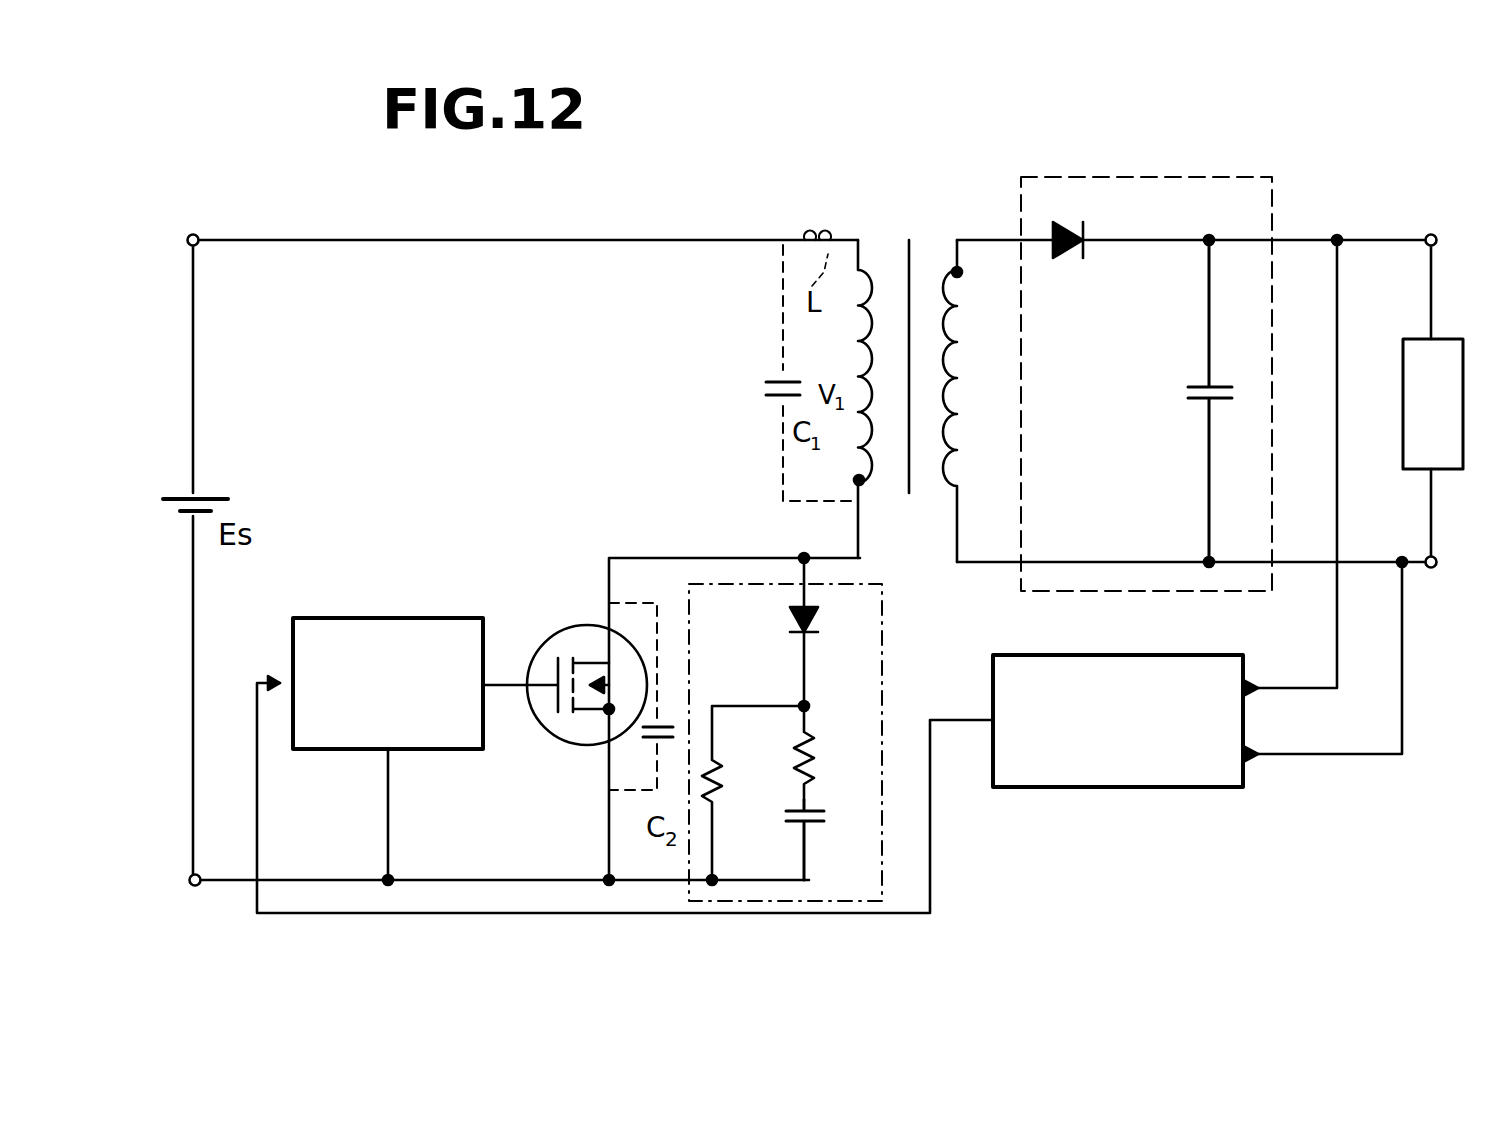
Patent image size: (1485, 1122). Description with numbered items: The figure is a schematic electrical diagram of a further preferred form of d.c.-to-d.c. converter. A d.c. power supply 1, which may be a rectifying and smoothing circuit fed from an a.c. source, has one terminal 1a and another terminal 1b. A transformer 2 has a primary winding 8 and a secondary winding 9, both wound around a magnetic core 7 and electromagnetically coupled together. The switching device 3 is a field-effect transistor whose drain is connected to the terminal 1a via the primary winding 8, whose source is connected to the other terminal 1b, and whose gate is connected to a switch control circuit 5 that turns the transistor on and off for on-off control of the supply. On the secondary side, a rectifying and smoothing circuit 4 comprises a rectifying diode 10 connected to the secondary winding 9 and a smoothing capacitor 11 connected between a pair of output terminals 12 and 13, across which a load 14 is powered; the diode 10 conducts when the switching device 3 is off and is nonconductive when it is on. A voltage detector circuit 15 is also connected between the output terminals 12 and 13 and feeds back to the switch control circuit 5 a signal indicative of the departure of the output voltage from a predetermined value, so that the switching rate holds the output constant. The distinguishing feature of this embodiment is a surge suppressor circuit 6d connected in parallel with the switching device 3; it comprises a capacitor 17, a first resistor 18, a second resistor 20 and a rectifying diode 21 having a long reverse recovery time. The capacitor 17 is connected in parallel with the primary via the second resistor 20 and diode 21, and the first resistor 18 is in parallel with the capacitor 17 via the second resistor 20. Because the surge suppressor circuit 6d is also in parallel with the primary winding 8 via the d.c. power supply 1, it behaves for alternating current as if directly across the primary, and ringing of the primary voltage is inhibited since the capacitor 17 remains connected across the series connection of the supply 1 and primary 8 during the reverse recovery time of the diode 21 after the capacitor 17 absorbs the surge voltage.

The terminal 1a is at (193, 232).
The terminal 1b is at (195, 888).
The d.c. power supply 1 is at (205, 496).
The transformer 2 is at (911, 224).
The switching device 3 is at (550, 746).
The rectifying and smoothing circuit 4 is at (1272, 226).
The switch control circuit 5 is at (378, 616).
The surge suppressor circuit 6d is at (882, 665).
The magnetic core 7 is at (912, 494).
The primary winding 8 is at (852, 354).
The secondary winding 9 is at (962, 305).
The rectifying diode 10 is at (1066, 260).
The smoothing capacitor 11 is at (1201, 378).
The output terminal 12 is at (1430, 232).
The output terminal 13 is at (1431, 568).
The load 14 is at (1413, 338).
The voltage detector circuit 15 is at (993, 690).
The capacitor 17 is at (812, 828).
The first resistor 18 is at (722, 780).
The second resistor 20 is at (810, 768).
The rectifying diode 21 is at (794, 622).